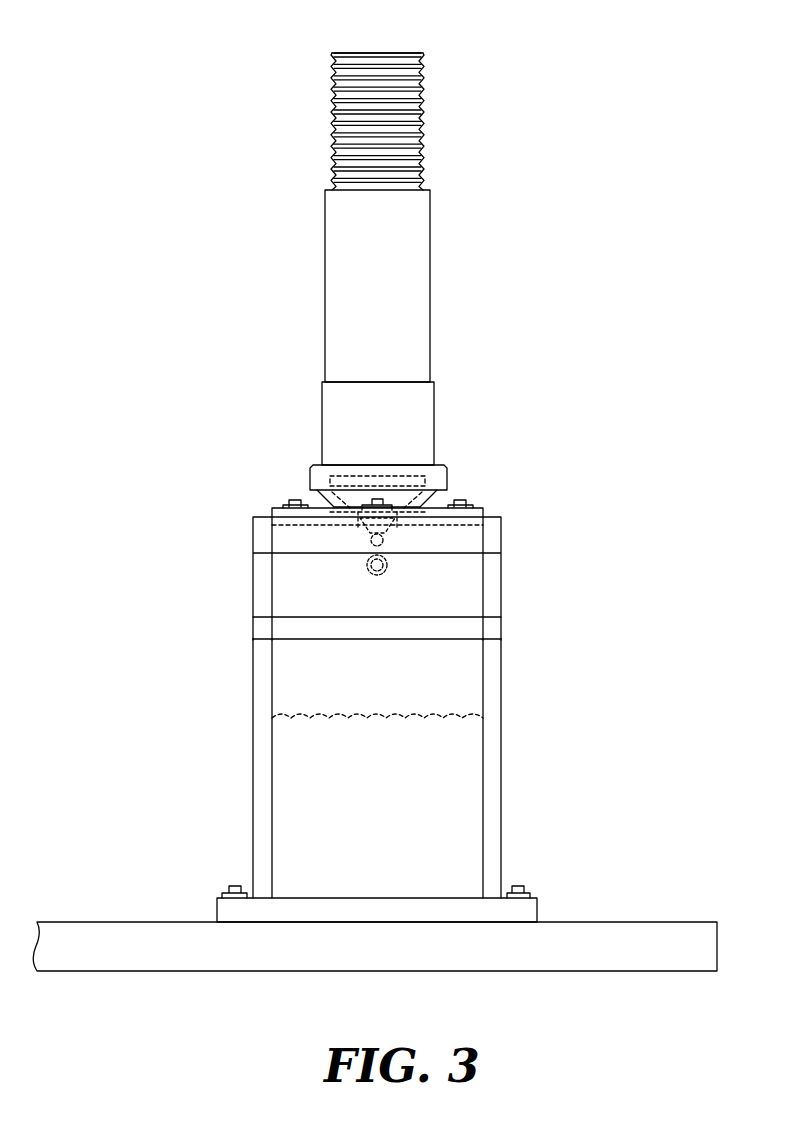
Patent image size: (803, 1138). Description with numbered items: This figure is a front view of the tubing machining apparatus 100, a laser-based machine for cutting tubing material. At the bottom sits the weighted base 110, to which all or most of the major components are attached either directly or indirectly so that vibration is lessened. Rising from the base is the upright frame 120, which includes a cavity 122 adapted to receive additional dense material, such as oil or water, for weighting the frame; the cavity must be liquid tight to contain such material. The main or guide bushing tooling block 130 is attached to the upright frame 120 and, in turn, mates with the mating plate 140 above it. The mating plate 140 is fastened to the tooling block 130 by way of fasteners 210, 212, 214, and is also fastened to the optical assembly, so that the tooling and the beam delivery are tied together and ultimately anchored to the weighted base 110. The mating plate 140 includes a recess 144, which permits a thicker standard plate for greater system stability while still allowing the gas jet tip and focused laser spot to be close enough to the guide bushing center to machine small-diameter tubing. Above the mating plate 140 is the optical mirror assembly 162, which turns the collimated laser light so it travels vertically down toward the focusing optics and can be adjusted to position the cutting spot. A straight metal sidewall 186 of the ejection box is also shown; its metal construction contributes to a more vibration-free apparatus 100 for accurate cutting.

The tubing machining apparatus 100 is at (165, 66).
The weighted base 110 is at (612, 922).
The upright frame 120 is at (503, 711).
The cavity 122 is at (468, 790).
The main or guide bushing tooling block 130 is at (468, 533).
The mating plate 140 is at (467, 517).
The recess 144 is at (338, 516).
The optical mirror assembly 162 is at (431, 288).
The sidewall 186 is at (494, 597).
The fastener 210 is at (374, 497).
The fastener 212 is at (292, 497).
The fastener 214 is at (463, 497).